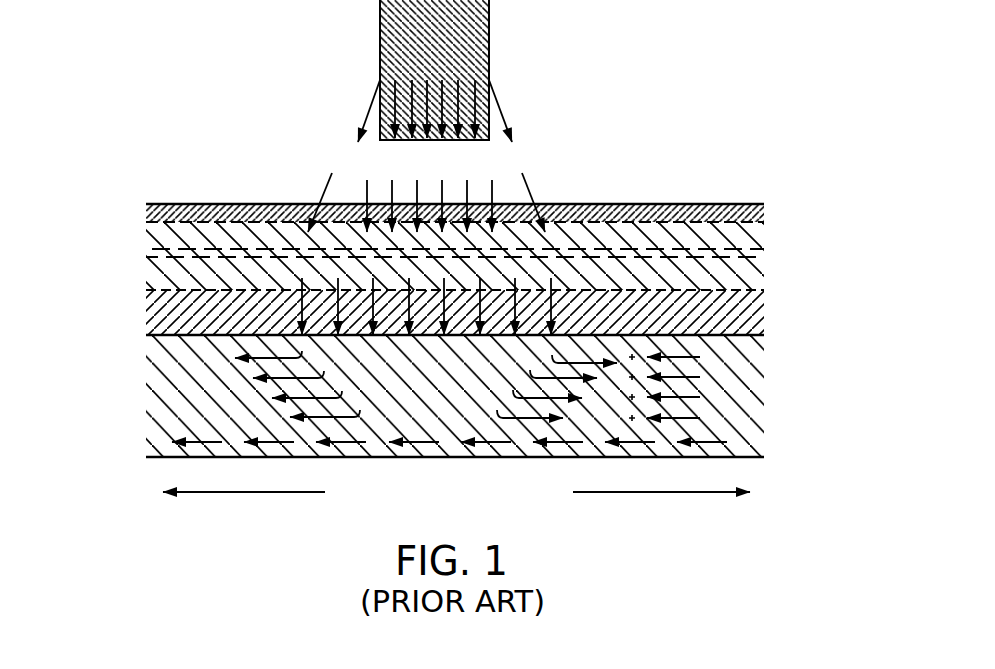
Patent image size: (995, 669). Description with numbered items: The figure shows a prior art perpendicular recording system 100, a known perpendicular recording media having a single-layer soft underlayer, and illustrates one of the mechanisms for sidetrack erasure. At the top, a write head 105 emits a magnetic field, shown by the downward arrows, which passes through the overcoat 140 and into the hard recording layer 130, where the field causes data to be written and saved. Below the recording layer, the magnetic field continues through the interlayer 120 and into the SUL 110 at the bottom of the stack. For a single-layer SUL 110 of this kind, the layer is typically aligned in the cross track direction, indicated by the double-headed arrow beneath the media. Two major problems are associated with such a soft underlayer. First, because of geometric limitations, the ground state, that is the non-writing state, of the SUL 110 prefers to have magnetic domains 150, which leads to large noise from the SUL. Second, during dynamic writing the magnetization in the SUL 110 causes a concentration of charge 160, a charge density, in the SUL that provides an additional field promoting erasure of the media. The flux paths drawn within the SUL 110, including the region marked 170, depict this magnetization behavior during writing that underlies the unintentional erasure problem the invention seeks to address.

The perpendicular recording system 100 is at (170, 65).
The write head 105 is at (477, 40).
The SUL 110 is at (147, 393).
The interlayer 120 is at (147, 312).
The hard recording layer 130 is at (147, 251).
The overcoat 140 is at (147, 213).
The magnetic domains 150 is at (695, 378).
The concentration of charge 160 is at (632, 421).
The return flux path 170 is at (322, 421).